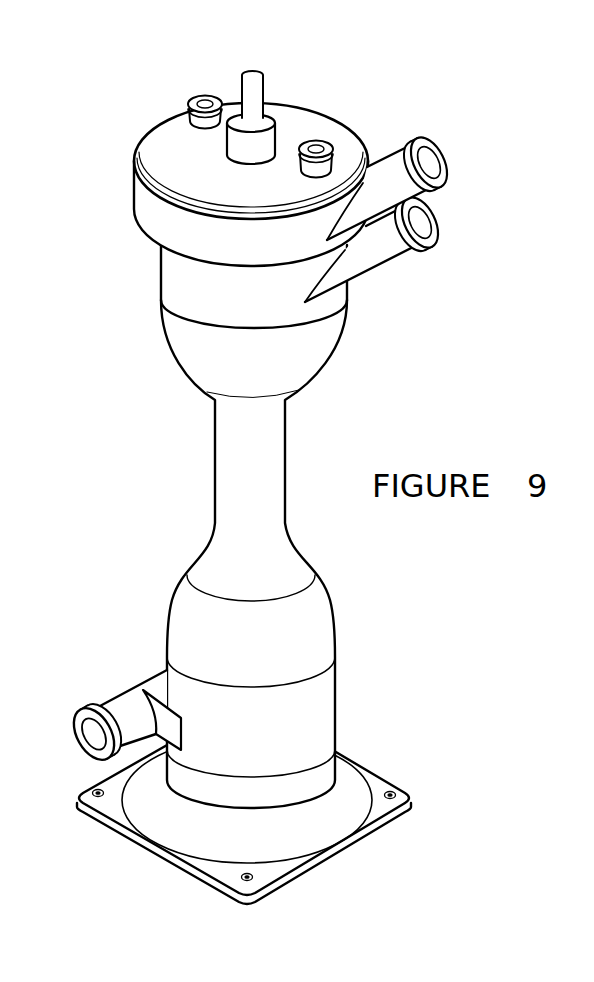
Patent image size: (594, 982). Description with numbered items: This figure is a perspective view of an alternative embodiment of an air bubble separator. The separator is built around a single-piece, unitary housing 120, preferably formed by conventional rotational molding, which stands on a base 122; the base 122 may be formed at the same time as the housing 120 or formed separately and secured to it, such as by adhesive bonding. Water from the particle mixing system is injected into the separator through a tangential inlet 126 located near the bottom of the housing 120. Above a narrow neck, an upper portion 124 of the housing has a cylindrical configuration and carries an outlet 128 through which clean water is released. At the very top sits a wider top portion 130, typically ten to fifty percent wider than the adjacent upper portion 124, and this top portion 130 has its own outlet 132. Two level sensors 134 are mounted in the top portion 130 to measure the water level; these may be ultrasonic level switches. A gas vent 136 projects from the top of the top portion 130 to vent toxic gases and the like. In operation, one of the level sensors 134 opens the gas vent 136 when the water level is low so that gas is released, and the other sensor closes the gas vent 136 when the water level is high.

The housing 120 is at (302, 443).
The base 122 is at (347, 788).
The upper portion 124 is at (183, 285).
The tangential inlet 126 is at (128, 702).
The outlet 128 is at (436, 222).
The top portion 130 is at (153, 214).
The outlet 132 is at (436, 148).
The level sensors 134 is at (197, 122).
The gas vent 136 is at (270, 143).